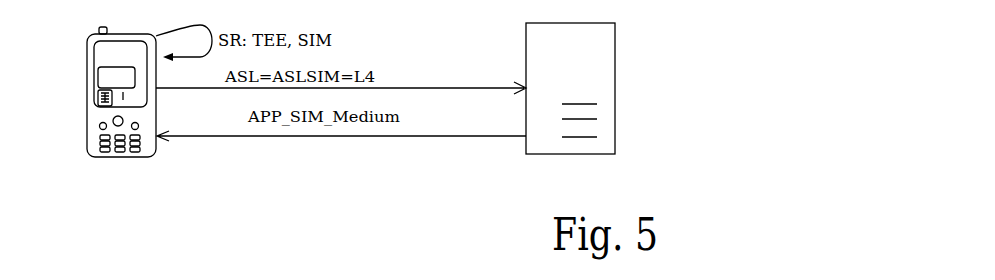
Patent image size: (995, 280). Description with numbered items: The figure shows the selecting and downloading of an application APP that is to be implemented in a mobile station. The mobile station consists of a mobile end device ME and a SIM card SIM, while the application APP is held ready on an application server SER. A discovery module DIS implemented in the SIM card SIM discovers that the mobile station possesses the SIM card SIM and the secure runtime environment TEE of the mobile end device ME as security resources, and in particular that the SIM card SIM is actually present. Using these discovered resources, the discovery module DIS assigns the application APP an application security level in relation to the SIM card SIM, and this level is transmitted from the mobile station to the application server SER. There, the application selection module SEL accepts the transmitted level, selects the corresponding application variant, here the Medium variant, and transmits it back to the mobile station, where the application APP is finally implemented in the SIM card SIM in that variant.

The mobile end device ME is at (121, 82).
The secure runtime environment TEE is at (120, 74).
The discovery module DIS is at (100, 78).
The SIM card SIM is at (97, 100).
The application APP is at (49, 110).
The application server SER is at (599, 88).
The application selection module SEL is at (568, 107).